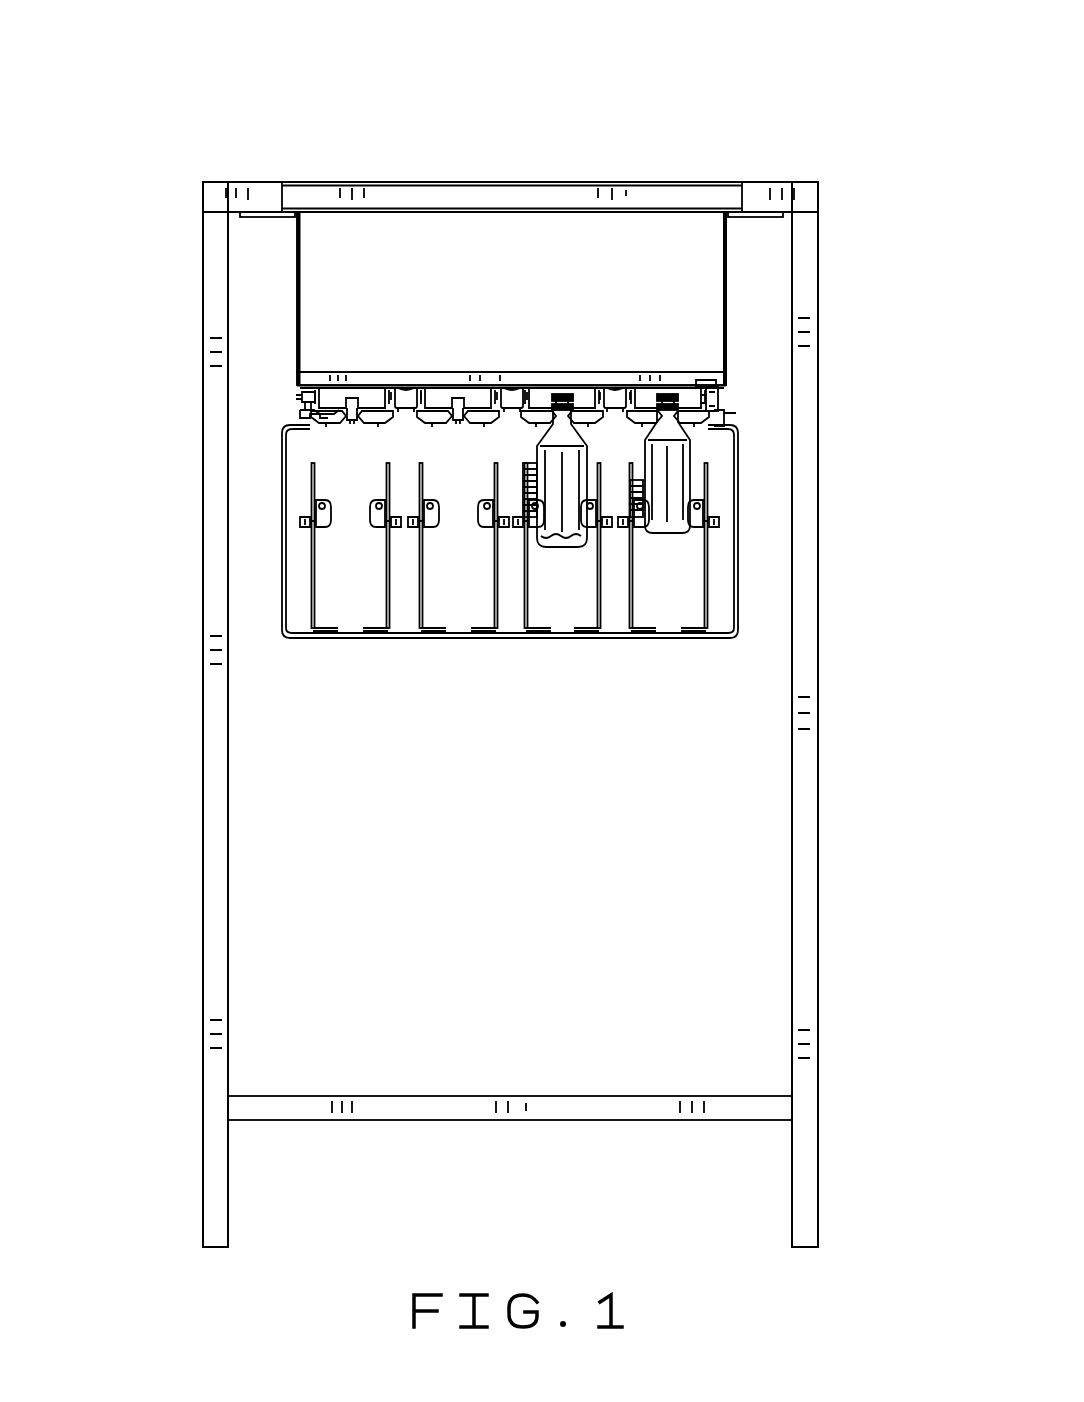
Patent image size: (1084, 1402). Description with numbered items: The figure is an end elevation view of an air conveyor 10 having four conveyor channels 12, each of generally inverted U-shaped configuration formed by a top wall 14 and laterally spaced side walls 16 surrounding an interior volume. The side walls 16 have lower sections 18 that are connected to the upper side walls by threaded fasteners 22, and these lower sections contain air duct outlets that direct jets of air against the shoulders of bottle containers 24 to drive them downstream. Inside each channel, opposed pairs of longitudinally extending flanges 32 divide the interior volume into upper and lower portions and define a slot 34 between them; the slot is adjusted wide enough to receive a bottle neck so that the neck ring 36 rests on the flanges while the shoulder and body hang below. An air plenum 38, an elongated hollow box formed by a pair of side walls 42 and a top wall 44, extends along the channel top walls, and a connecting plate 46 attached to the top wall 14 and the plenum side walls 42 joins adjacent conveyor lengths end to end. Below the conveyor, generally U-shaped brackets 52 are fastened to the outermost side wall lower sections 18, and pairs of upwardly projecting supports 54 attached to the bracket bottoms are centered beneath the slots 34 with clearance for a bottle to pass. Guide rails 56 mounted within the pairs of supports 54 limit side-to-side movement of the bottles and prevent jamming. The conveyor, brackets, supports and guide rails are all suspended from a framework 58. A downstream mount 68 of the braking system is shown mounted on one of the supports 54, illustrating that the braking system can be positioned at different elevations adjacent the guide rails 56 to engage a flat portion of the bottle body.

The air conveyor 10 is at (664, 157).
The conveyor channel 12 is at (455, 394).
The top wall 14 is at (405, 377).
The side wall 16 is at (307, 397).
The lower section 18 is at (310, 410).
The threaded fastener 22 is at (315, 435).
The bottle container 24 is at (670, 457).
The flange 32 is at (556, 392).
The slot 34 is at (342, 425).
The neck ring 36 is at (562, 392).
The air plenum 38 is at (460, 262).
The plenum side wall 42 is at (293, 265).
The plenum top wall 44 is at (476, 212).
The connecting plate 46 is at (380, 377).
The bracket 52 is at (282, 585).
The support 54 is at (313, 610).
The guide rail 56 is at (700, 508).
The framework 58 is at (208, 862).
The downstream mount 68 is at (535, 480).